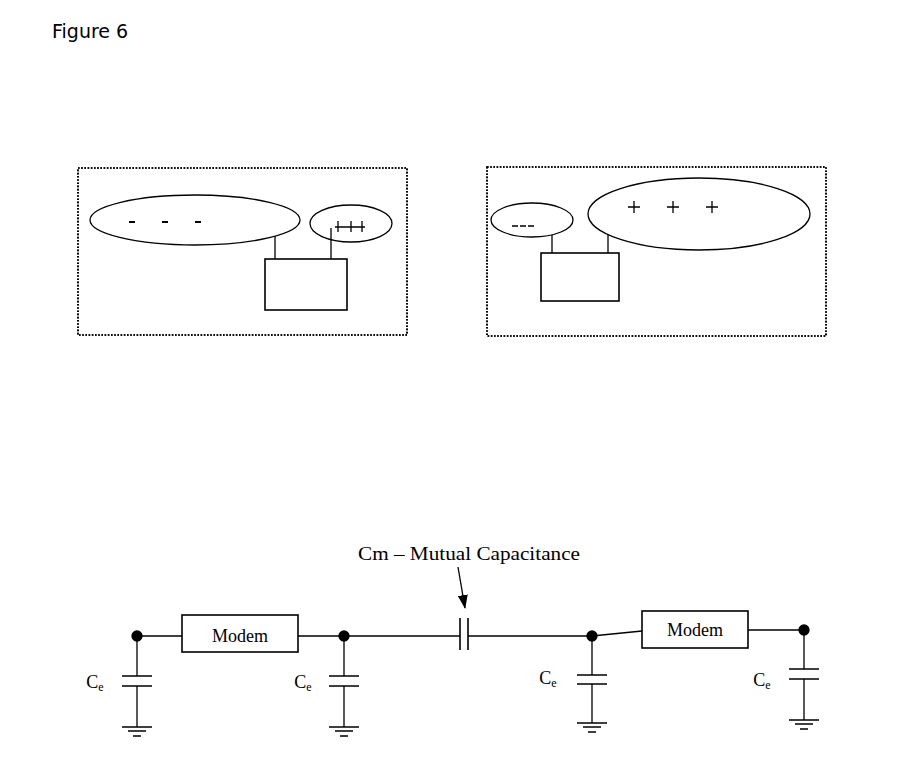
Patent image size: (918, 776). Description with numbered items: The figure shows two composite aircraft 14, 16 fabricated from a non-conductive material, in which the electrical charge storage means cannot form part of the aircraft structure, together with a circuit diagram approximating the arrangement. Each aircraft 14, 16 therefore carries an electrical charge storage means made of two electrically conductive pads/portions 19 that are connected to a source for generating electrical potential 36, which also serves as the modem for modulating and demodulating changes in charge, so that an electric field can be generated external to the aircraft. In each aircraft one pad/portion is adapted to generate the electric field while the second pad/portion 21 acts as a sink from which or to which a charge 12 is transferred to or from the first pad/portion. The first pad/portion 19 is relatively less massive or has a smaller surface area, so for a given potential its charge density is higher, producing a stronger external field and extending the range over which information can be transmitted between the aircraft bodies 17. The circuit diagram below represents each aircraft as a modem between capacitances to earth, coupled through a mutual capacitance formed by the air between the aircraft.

The charge 12 is at (220, 205).
The composite aircraft 14 is at (255, 338).
The composite aircraft 16 is at (665, 337).
The device housing 17 is at (160, 318).
The electrically conductive pad/portion 19 is at (380, 223).
The first (large) electrode 21 is at (107, 222).
The source for generating electrical potential 36 is at (442, 269).